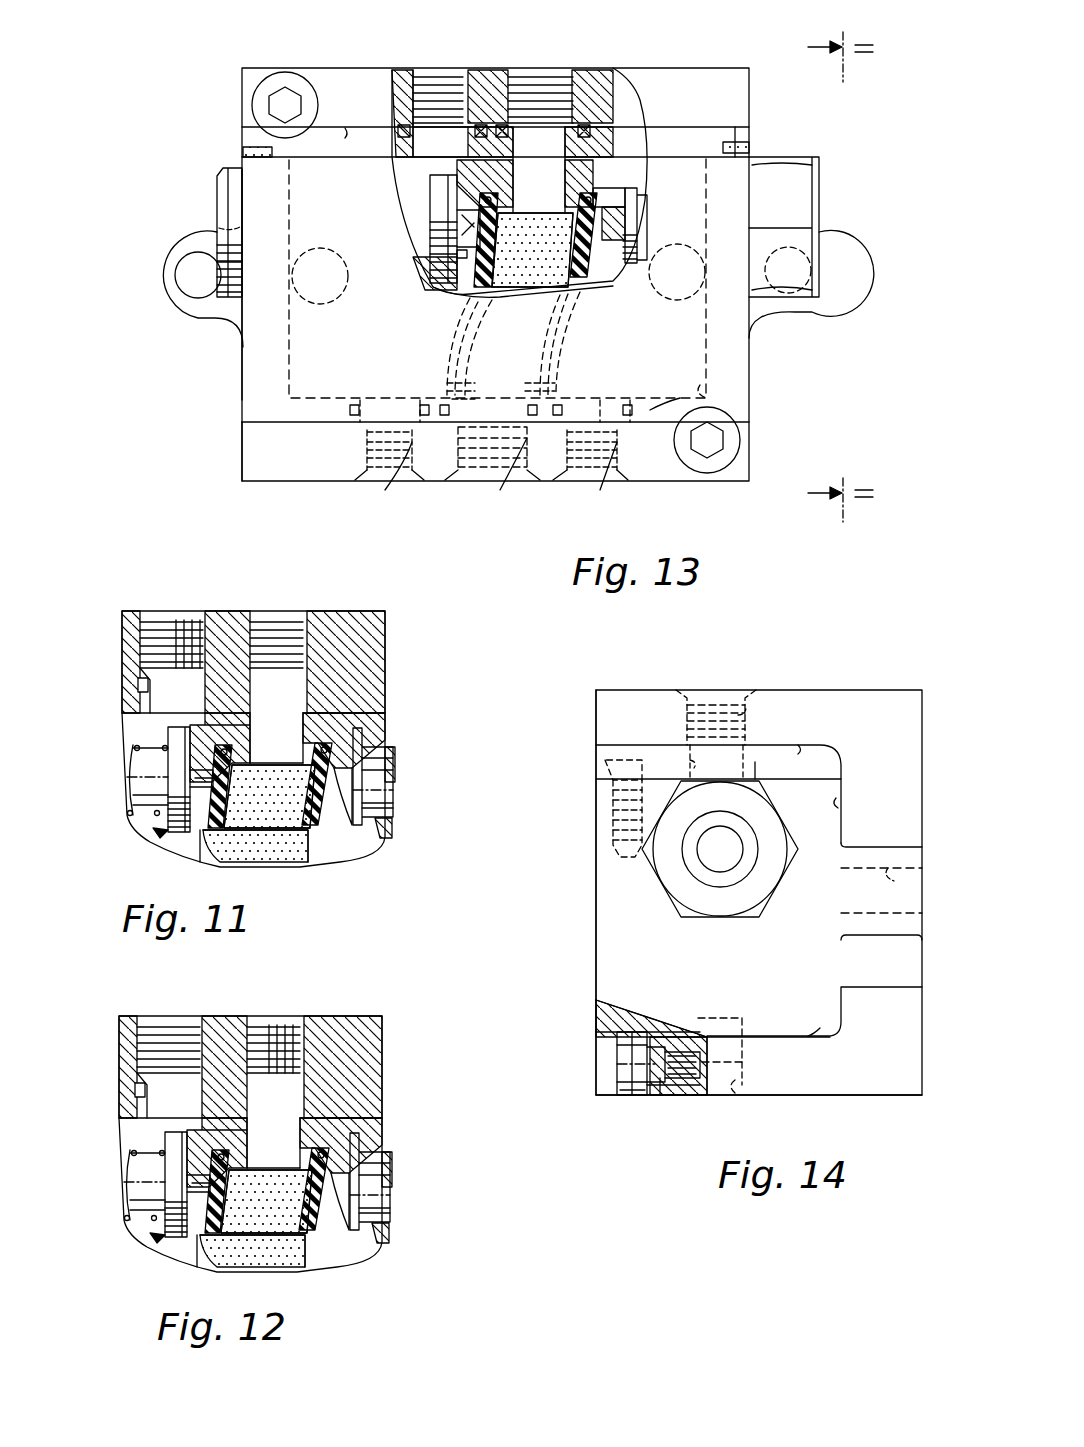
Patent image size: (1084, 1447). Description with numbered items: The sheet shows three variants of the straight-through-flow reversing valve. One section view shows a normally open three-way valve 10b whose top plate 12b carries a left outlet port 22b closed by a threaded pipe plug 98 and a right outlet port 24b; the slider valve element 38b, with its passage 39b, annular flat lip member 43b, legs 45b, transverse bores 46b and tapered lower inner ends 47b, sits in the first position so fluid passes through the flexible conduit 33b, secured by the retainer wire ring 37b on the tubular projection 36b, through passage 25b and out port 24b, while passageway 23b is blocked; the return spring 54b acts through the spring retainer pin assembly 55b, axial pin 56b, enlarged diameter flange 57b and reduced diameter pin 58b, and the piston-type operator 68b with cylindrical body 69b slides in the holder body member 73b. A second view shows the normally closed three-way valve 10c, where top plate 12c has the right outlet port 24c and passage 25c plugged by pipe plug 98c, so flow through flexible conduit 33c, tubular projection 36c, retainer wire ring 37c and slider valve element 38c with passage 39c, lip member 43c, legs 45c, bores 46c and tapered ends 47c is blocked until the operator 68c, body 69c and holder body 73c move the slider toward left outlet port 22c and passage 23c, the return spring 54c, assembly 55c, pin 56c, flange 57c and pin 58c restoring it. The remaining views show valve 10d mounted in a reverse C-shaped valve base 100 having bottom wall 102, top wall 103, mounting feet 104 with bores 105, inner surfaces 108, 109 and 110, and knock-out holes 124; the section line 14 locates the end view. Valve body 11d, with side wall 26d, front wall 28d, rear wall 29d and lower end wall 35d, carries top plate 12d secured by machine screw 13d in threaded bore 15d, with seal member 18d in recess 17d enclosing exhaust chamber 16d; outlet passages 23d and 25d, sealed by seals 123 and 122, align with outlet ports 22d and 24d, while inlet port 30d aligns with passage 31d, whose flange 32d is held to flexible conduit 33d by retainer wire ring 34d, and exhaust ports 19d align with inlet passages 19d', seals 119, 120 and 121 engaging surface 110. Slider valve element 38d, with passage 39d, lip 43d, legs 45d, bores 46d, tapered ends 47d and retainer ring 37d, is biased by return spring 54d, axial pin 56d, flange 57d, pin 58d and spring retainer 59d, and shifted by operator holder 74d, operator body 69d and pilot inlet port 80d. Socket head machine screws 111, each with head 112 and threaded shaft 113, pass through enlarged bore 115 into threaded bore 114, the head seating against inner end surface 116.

In FIG. 13, the valve base 100 is at (252, 62).
In FIG. 14, the valve base 100 is at (630, 685).
In FIG. 13, the bottom wall 102 is at (278, 480).
In FIG. 14, the bottom wall 102 is at (866, 1082).
In FIG. 13, the top wall 103 is at (682, 85).
In FIG. 14, the top wall 103 is at (868, 705).
In FIG. 13, the mounting feet 104 is at (175, 308).
In FIG. 14, the mounting feet 104 is at (892, 855).
In FIG. 13, the bore 105 is at (192, 276).
In FIG. 14, the bore 105 is at (898, 880).
In FIG. 13, the inner surface of top wall 108 is at (352, 135).
In FIG. 14, the inner surface of top wall 108 is at (802, 748).
In FIG. 14, the inner surface of rear wall 109 is at (838, 806).
In FIG. 13, the inner surface of bottom wall 110 is at (302, 425).
In FIG. 14, the inner surface of bottom wall 110 is at (792, 1040).
In FIG. 13, the socket head machine screw 111 is at (292, 70).
In FIG. 14, the socket head machine screw 111 is at (605, 1070).
In FIG. 13, the screw head 112 is at (306, 90).
In FIG. 14, the screw head 112 is at (625, 1046).
In FIG. 14, the threaded shaft 113 is at (650, 1098).
In FIG. 14, the threaded bore 114 is at (680, 1050).
In FIG. 14, the enlarged diameter bore 115 is at (622, 1098).
In FIG. 13, the inner end surface of bore portion 116 is at (283, 133).
In FIG. 14, the inner end surface of bore portion 116 is at (640, 1040).
In FIG. 13, the annular seal 119 is at (545, 395).
In FIG. 13, the annular seal 120 is at (625, 400).
In FIG. 13, the annular seal 121 is at (428, 400).
In FIG. 13, the annular seal 122 is at (592, 122).
In FIG. 13, the annular seal 123 is at (395, 160).
In FIG. 13, the knock-out holes 124 is at (325, 250).
In FIG. 13, the valve 10d is at (238, 405).
In FIG. 14, the valve 10d is at (590, 920).
In FIG. 13, the valve body 11d is at (258, 172).
In FIG. 14, the valve body 11d is at (612, 932).
In FIG. 13, the top plate 12d is at (713, 135).
In FIG. 14, the top plate 12d is at (765, 765).
In FIG. 14, the machine screw 13d is at (605, 770).
In FIG. 14, the threaded bore 15d is at (606, 798).
In FIG. 13, the exhaust chamber 16d is at (706, 398).
In FIG. 13, the recess 17d is at (737, 142).
In FIG. 13, the seal member 18d is at (745, 150).
In FIG. 13, the threaded exhaust ports 19d is at (495, 474).
In FIG. 14, the threaded exhaust ports 19d is at (777, 1094).
In FIG. 13, the inlet passages 19d' is at (486, 388).
In FIG. 14, the inlet passages 19d' is at (753, 1018).
In FIG. 13, the threaded outlet port 22d is at (450, 90).
In FIG. 13, the outlet passage 23d is at (418, 108).
In FIG. 13, the threaded outlet port 24d is at (578, 90).
In FIG. 14, the threaded outlet port 24d is at (738, 690).
In FIG. 13, the outlet passage 25d is at (527, 100).
In FIG. 14, the outlet passage 25d is at (684, 757).
In FIG. 14, the side wall 26d is at (608, 985).
In FIG. 13, the front wall 28d is at (262, 211).
In FIG. 14, the front wall 28d is at (596, 880).
In FIG. 14, the rear wall 29d is at (890, 990).
In FIG. 13, the threaded inlet port 30d is at (500, 483).
In FIG. 13, the passage 31d is at (507, 346).
In FIG. 13, the tubular flange 32d is at (560, 326).
In FIG. 13, the flexible conduit 33d is at (470, 300).
In FIG. 13, the retainer wire ring 34d is at (483, 346).
In FIG. 13, the lower end wall 35d is at (690, 400).
In FIG. 14, the lower end wall 35d is at (765, 1040).
In FIG. 13, the retainer wire ring 37d is at (445, 200).
In FIG. 13, the slider valve element 38d is at (622, 180).
In FIG. 13, the passage 39d is at (532, 250).
In FIG. 13, the annular flat lip member 43d is at (575, 185).
In FIG. 13, the leg 45d is at (612, 200).
In FIG. 13, the transverse bore 46d is at (535, 222).
In FIG. 13, the tapered lower inner ends 47d is at (557, 254).
In FIG. 13, the return spring 54d is at (458, 282).
In FIG. 13, the axial pin 56d is at (440, 258).
In FIG. 13, the enlarged diameter flange 57d is at (440, 226).
In FIG. 13, the reduced diameter pin 58d is at (432, 262).
In FIG. 13, the spring retainer 59d is at (222, 288).
In FIG. 13, the operator cylindrical body 69d is at (620, 246).
In FIG. 13, the operator holder 74d is at (820, 182).
In FIG. 14, the operator holder 74d is at (665, 900).
In FIG. 14, the threaded inlet port 80d is at (720, 872).
In FIG. 11, the three-way valve 10b is at (118, 640).
In FIG. 11, the top plate 12b is at (232, 620).
In FIG. 11, the left outlet port 22b is at (160, 625).
In FIG. 11, the passageway 23b is at (150, 690).
In FIG. 11, the right outlet port 24b is at (290, 620).
In FIG. 11, the passage 25b is at (305, 690).
In FIG. 11, the flexible conduit 33b is at (280, 868).
In FIG. 11, the tubular projection 36b is at (276, 748).
In FIG. 11, the retainer wire ring 37b is at (345, 735).
In FIG. 11, the slider valve element 38b is at (220, 722).
In FIG. 11, the passage 39b is at (262, 732).
In FIG. 11, the annular flat lip member 43b is at (330, 700).
In FIG. 11, the leg 45b is at (370, 760).
In FIG. 11, the transverse bore 46b is at (405, 776).
In FIG. 11, the tapered lower inner ends 47b is at (200, 830).
In FIG. 11, the return spring 54b is at (140, 752).
In FIG. 11, the spring retainer pin assembly 55b is at (165, 832).
In FIG. 11, the axial pin 56b is at (145, 775).
In FIG. 11, the enlarged diameter flange 57b is at (172, 742).
In FIG. 11, the reduced diameter pin 58b is at (269, 795).
In FIG. 11, the piston-type operator 68b is at (355, 822).
In FIG. 11, the operator cylindrical body 69b is at (378, 803).
In FIG. 11, the operator holder body member 73b is at (385, 845).
In FIG. 11, the threaded pipe plug 98 is at (190, 625).
In FIG. 12, the three-way valve 10c is at (216, 1129).
In FIG. 12, the top plate 12c is at (224, 1044).
In FIG. 12, the left outlet port 22c is at (166, 1046).
In FIG. 12, the passage 23c is at (98, 1067).
In FIG. 12, the right outlet port 24c is at (273, 1014).
In FIG. 12, the passage 25c is at (368, 1067).
In FIG. 12, the flexible conduit 33c is at (287, 1271).
In FIG. 12, the tubular projection 36c is at (273, 1153).
In FIG. 12, the retainer wire ring 37c is at (369, 1135).
In FIG. 12, the slider valve element 38c is at (217, 1130).
In FIG. 12, the passage 39c is at (273, 1131).
In FIG. 12, the annular flat lip member 43c is at (279, 1084).
In FIG. 12, the leg 45c is at (399, 1181).
In FIG. 12, the transverse bore 46c is at (336, 1188).
In FIG. 12, the tapered lower inner ends 47c is at (243, 1220).
In FIG. 12, the return spring 54c is at (108, 1181).
In FIG. 12, the spring retainer pin assembly 55c is at (138, 1256).
In FIG. 12, the axial pin 56c is at (131, 1185).
In FIG. 12, the enlarged diameter flange 57c is at (121, 1175).
In FIG. 12, the reduced diameter pin 58c is at (266, 1201).
In FIG. 12, the piston-type operator 68c is at (328, 1216).
In FIG. 12, the operator cylindrical body 69c is at (409, 1195).
In FIG. 12, the operator holder body member 73c is at (409, 1253).
In FIG. 12, the threaded pipe plug 98c is at (292, 1023).
In FIG. 13, the section line 14 is at (823, 277).